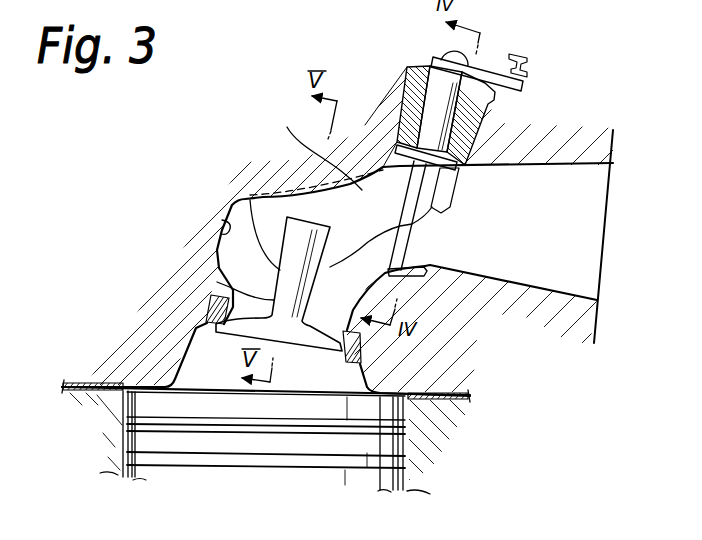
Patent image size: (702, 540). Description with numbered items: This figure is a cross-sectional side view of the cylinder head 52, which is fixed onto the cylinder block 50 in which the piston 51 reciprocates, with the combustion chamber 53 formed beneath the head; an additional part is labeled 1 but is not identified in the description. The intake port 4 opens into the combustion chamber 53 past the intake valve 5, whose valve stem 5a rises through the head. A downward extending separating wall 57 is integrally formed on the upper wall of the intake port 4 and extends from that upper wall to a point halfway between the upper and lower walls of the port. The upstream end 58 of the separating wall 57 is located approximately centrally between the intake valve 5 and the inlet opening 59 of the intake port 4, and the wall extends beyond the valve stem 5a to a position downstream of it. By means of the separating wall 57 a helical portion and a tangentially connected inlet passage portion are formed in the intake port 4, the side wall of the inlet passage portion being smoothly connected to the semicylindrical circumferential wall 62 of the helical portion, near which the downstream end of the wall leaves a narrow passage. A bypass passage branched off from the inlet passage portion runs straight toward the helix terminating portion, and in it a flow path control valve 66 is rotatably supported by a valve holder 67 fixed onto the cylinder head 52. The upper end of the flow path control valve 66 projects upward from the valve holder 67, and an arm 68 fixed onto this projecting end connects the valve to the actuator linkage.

The cylinder head assembly 1 is at (80, 358).
The intake port 4 is at (553, 238).
The intake valve 5 is at (217, 257).
The valve stem 5a is at (248, 203).
The cylinder block 50 is at (417, 448).
The piston 51 is at (375, 476).
The cylinder head 52 is at (534, 147).
The combustion chamber 53 is at (200, 360).
The separating wall 57 is at (309, 148).
The upstream end of the separating wall 58 is at (455, 191).
The inlet opening 59 is at (616, 184).
The circumferential wall of the helical portion 62 is at (222, 222).
The flow path control valve 66 is at (402, 238).
The valve holder 67 is at (414, 67).
The arm 68 is at (490, 69).